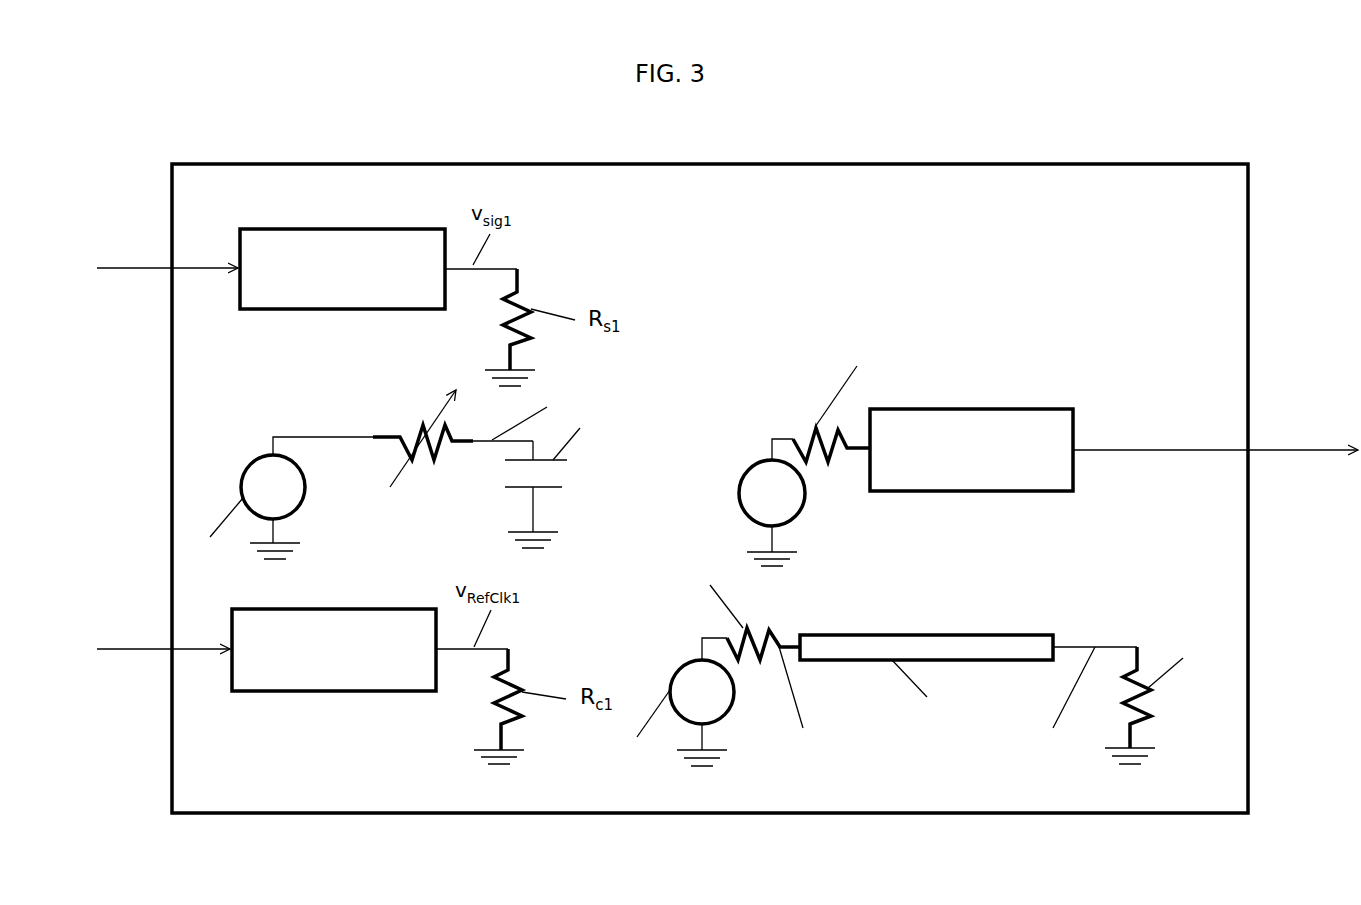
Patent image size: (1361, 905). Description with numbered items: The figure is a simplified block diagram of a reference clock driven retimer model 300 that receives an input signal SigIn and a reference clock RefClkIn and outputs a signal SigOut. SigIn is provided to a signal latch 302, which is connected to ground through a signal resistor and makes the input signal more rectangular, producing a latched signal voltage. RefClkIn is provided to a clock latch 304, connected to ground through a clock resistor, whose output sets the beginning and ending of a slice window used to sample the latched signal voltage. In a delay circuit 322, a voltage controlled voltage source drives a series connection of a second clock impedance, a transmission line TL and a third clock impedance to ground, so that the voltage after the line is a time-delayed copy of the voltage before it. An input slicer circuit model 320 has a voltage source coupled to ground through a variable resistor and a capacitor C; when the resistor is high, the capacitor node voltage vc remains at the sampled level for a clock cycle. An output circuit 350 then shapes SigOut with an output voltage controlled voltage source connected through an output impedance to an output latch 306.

The reference clock driven retimer model 300 is at (441, 112).
The signal latch 302 is at (342, 269).
The clock latch 304 is at (334, 650).
The output latch 306 is at (971, 450).
The input slicer circuit model 320 is at (222, 428).
The delay circuit 322 is at (969, 604).
The output circuit 350 is at (931, 428).